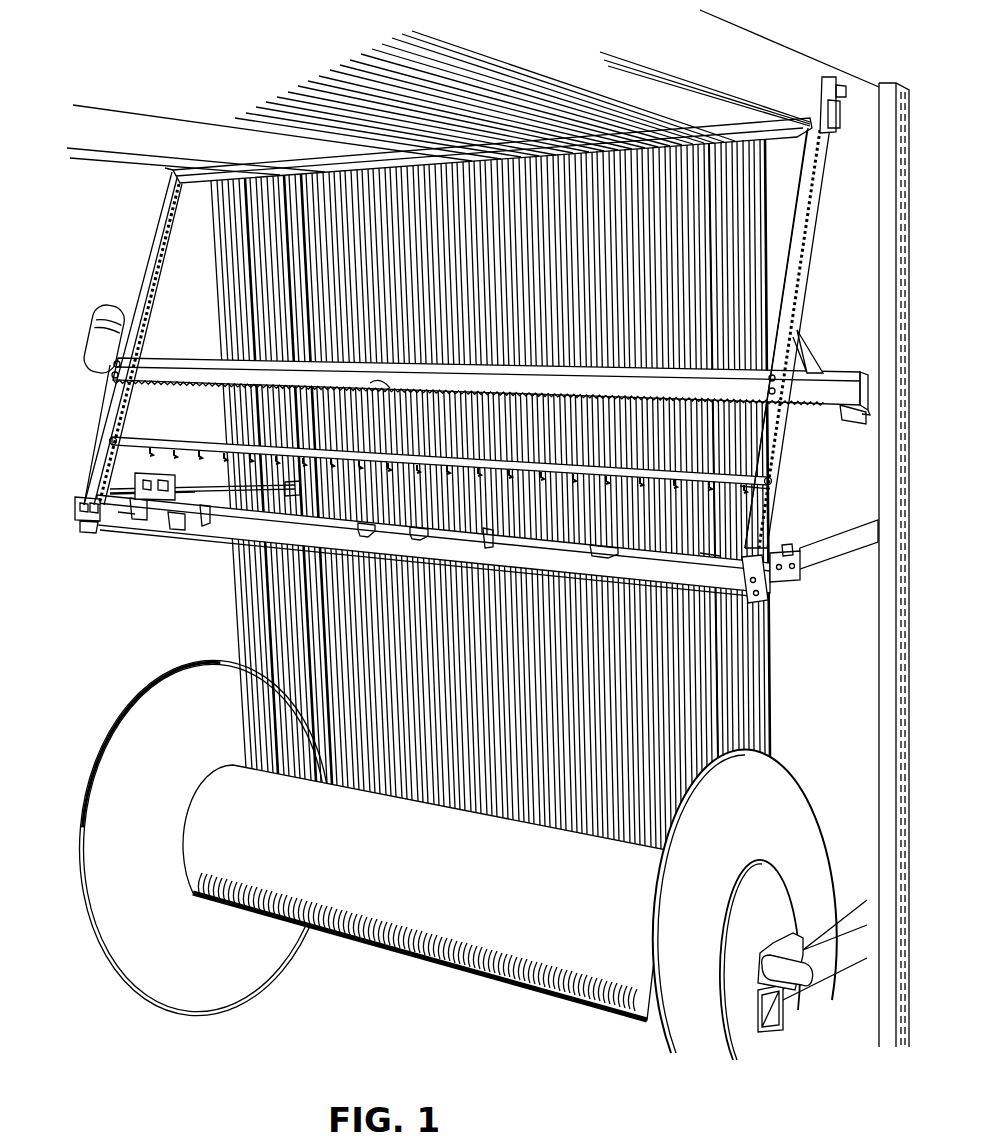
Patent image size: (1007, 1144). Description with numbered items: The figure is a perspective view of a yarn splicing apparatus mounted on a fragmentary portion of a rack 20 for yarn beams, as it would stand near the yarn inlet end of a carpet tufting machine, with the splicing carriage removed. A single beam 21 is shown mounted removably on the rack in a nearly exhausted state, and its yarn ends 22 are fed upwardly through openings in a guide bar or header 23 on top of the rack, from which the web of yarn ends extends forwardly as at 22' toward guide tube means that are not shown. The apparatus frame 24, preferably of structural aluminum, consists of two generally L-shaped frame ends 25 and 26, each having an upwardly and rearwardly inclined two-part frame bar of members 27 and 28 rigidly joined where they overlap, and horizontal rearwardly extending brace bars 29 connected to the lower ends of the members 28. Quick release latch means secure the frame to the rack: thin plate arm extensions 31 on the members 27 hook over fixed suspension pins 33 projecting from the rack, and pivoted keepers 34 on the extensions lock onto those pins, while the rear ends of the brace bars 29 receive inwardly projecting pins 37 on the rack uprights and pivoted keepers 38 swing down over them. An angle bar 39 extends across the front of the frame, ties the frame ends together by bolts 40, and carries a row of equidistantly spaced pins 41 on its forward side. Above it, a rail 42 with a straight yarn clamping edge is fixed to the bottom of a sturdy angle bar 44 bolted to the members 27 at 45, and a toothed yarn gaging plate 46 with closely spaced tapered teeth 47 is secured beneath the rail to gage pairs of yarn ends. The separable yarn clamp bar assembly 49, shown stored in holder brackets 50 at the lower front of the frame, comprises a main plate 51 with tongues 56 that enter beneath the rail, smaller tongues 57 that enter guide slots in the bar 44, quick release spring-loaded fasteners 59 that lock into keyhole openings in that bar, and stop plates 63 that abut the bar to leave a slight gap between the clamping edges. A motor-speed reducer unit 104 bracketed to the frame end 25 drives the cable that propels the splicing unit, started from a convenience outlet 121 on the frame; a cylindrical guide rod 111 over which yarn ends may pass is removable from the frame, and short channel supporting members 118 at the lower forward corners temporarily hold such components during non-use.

The rack 20 is at (879, 648).
The beam 21 is at (385, 905).
The yarn ends 22 is at (517, 494).
The web of yarn ends 22' is at (473, 91).
The guide bar or header 23 is at (752, 130).
The frame 24 is at (150, 241).
The frame end 25 is at (138, 274).
The frame end 26 is at (808, 267).
The frame bar member 27 is at (158, 218).
The frame bar member 28 is at (124, 418).
The brace bar 29 is at (200, 492).
The arm extension 31 is at (822, 105).
The suspension pin 33 is at (842, 90).
The pivoted keeper 34 is at (834, 108).
The pin 37 is at (275, 545).
The pivoted keeper 38 is at (285, 490).
The angle bar 39 is at (755, 487).
The bolts 40 is at (110, 441).
The pins 41 is at (200, 449).
The rail 42 is at (840, 412).
The angle bar 44 is at (838, 373).
The bolts 45 is at (118, 368).
The toothed yarn gaging plate 46 is at (495, 393).
The teeth 47 is at (372, 383).
The yarn clamp bar assembly 49 is at (179, 526).
The holder brackets 50 is at (95, 525).
The plate 51 is at (150, 500).
The tongues 56 is at (799, 569).
The tongues 57 is at (205, 526).
The quick release fasteners 59 is at (410, 531).
The stop plates 63 is at (786, 545).
The motor-speed reducer unit 104 is at (98, 312).
The guide rod 111 is at (712, 365).
The channel supporting members 118 is at (120, 520).
The convenience outlet 121 is at (170, 512).